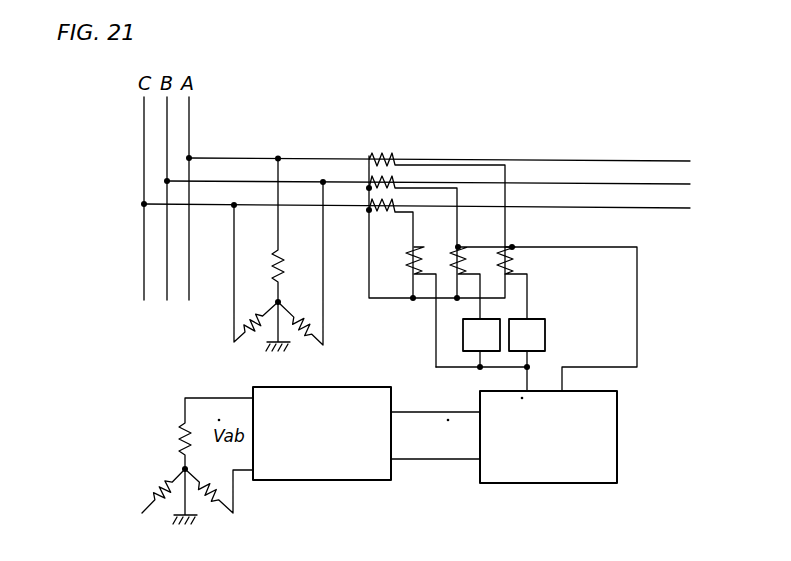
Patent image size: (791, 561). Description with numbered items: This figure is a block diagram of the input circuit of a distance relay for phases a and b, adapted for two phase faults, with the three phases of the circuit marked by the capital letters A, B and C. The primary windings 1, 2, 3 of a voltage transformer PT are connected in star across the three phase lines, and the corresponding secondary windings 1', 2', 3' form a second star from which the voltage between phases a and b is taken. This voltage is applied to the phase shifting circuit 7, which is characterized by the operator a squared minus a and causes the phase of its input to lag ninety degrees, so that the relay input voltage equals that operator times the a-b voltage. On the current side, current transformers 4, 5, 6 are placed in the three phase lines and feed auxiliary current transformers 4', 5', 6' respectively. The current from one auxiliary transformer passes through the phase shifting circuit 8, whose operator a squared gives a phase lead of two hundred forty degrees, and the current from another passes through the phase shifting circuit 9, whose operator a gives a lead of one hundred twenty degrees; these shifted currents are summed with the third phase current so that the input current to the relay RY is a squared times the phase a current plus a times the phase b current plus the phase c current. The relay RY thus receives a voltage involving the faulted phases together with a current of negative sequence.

The primary winding of voltage transformer 1 is at (291, 230).
The primary winding of voltage transformer 2 is at (300, 263).
The primary winding of voltage transformer 3 is at (256, 273).
The current transformer 4 is at (437, 213).
The current transformer 5 is at (413, 216).
The current transformer 6 is at (391, 248).
The auxiliary current transformer 4' is at (526, 283).
The auxiliary current transformer 5' is at (543, 306).
The auxiliary current transformer 6' is at (422, 294).
The secondary winding of voltage transformer 1' is at (216, 433).
The secondary winding of voltage transformer 2' is at (219, 512).
The secondary winding of voltage transformer 3' is at (155, 486).
The phase shifting circuit 7 is at (360, 481).
The phase shifting circuit 8 is at (547, 333).
The phase shifting circuit 9 is at (463, 331).
The relay RY is at (617, 460).